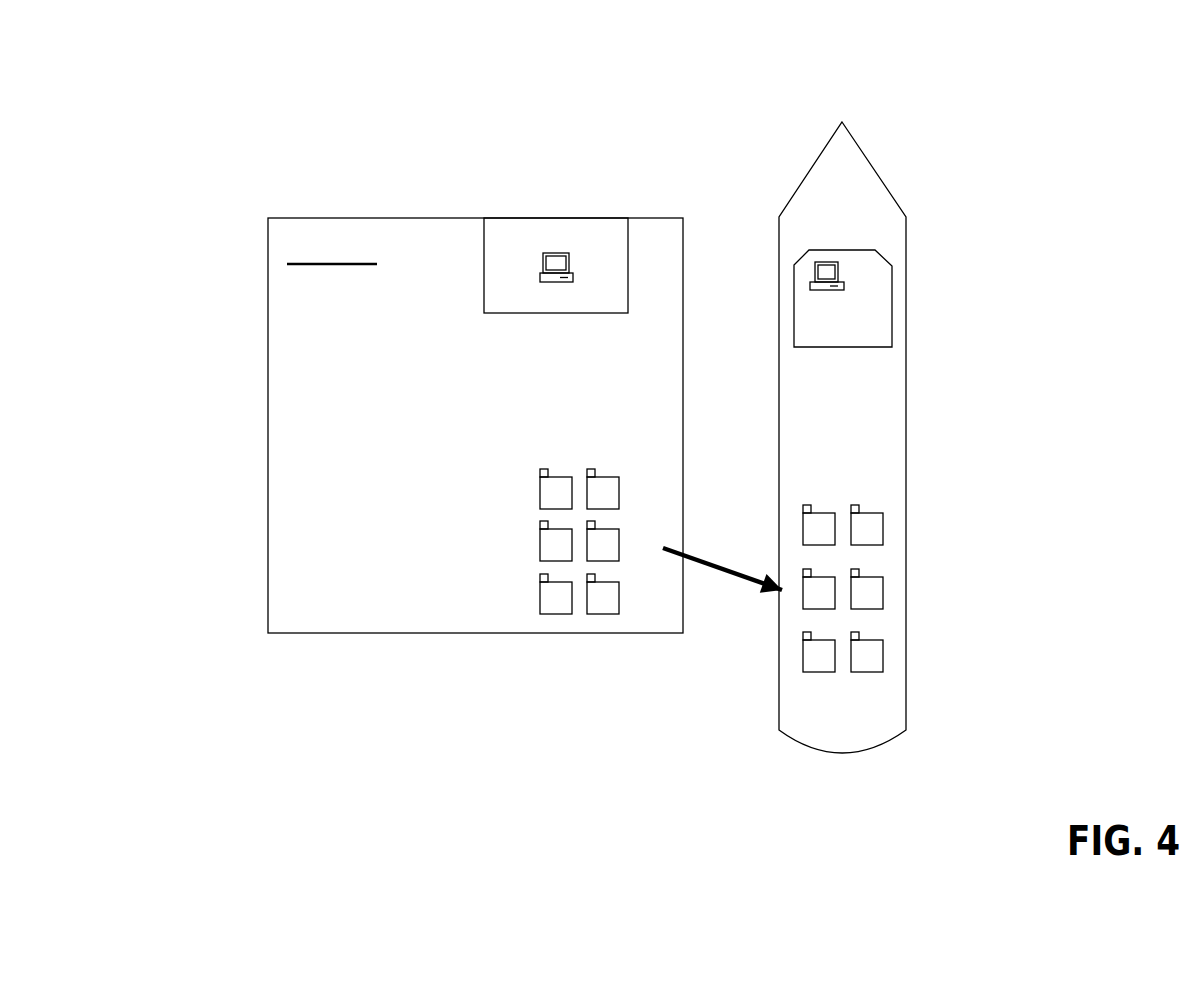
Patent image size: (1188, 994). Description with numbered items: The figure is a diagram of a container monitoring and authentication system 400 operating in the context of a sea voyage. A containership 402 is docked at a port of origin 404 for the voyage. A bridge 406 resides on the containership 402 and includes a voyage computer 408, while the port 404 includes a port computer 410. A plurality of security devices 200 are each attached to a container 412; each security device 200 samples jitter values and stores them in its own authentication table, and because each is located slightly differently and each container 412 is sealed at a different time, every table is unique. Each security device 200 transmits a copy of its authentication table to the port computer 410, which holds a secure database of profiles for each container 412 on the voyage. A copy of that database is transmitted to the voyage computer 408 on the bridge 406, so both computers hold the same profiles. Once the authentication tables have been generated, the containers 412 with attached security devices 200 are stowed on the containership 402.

The container monitoring and authentication system 400 is at (1054, 79).
The containership 402 is at (803, 178).
The port of origin 404 is at (385, 217).
The bridge 406 is at (853, 249).
The voyage computer 408 is at (853, 284).
The port computer 410 is at (572, 292).
The security device 200 is at (537, 573).
The container 412 is at (620, 583).